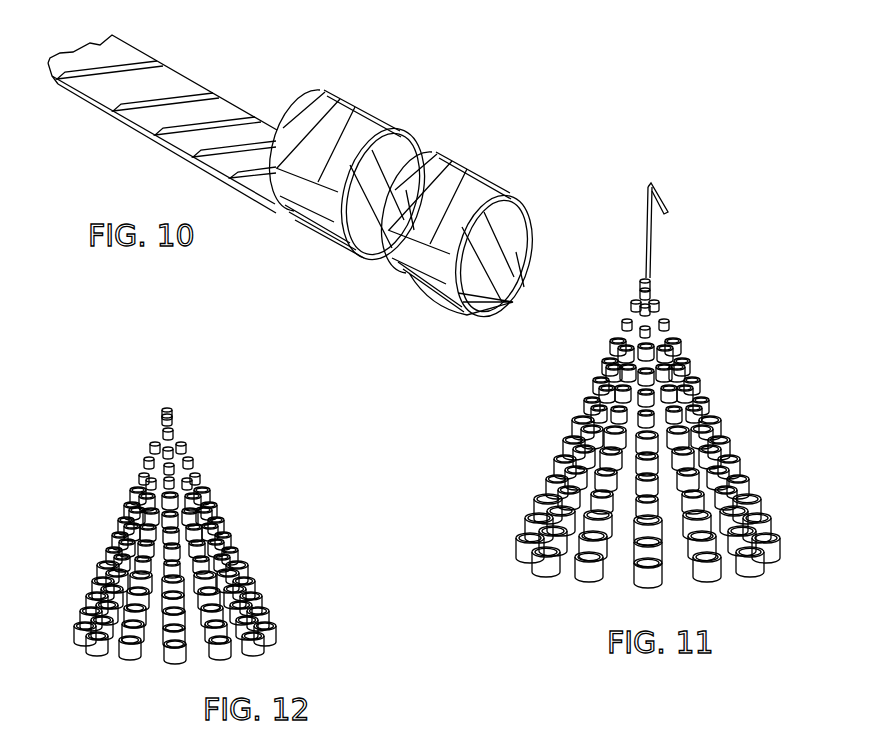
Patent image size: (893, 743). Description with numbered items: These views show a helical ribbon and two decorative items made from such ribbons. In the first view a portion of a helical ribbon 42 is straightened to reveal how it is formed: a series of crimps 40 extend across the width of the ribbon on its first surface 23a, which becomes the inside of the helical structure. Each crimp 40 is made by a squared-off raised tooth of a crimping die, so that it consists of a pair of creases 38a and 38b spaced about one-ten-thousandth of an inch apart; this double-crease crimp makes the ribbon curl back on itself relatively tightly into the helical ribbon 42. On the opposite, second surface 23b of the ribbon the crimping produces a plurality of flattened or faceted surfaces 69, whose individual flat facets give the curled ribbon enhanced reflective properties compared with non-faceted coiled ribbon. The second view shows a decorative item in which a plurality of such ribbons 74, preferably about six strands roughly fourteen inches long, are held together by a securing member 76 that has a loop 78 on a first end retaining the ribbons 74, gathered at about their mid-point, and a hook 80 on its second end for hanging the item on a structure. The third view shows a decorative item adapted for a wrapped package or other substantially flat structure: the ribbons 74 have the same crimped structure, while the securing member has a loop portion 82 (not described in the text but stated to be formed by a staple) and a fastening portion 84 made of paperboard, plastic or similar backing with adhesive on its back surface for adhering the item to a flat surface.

In FIG. 10, the first surface 23a is at (213, 110).
In FIG. 10, the crimp 40 is at (166, 67).
In FIG. 10, the crease 38a is at (50, 77).
In FIG. 10, the crease 38b is at (80, 90).
In FIG. 10, the helical ribbon 42 is at (350, 107).
In FIG. 10, the second surface 23b is at (473, 182).
In FIG. 10, the faceted surface 69 is at (303, 113).
In FIG. 11, the ribbons 74 is at (730, 452).
In FIG. 11, the securing member 76 is at (640, 240).
In FIG. 11, the loop 78 is at (653, 273).
In FIG. 11, the hook 80 is at (663, 198).
In FIG. 12, the apex bead 82 is at (178, 420).
In FIG. 12, the fastening portion 84 is at (152, 425).